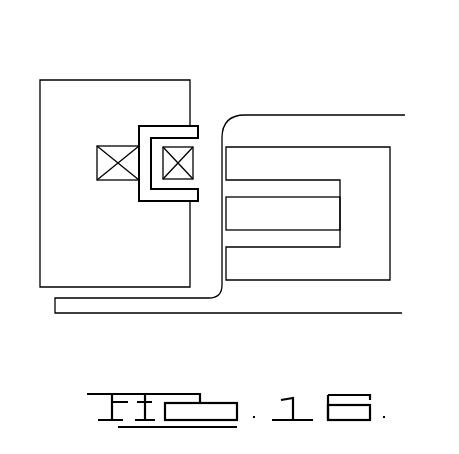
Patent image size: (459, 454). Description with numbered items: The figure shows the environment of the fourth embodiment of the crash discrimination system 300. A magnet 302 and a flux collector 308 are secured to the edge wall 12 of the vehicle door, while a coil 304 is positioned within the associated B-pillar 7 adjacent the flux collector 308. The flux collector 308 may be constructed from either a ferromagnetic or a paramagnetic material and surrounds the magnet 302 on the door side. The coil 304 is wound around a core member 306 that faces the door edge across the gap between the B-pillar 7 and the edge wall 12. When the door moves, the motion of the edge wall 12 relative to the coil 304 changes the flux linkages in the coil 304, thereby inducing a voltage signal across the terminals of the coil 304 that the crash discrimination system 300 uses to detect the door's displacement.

The B-pillar 7 is at (62, 80).
The edge wall 12 is at (313, 113).
The crash discrimination system 300 is at (162, 131).
The magnet 302 is at (283, 220).
The coil 304 is at (112, 180).
The core 306 is at (193, 123).
The flux collector 308 is at (368, 282).